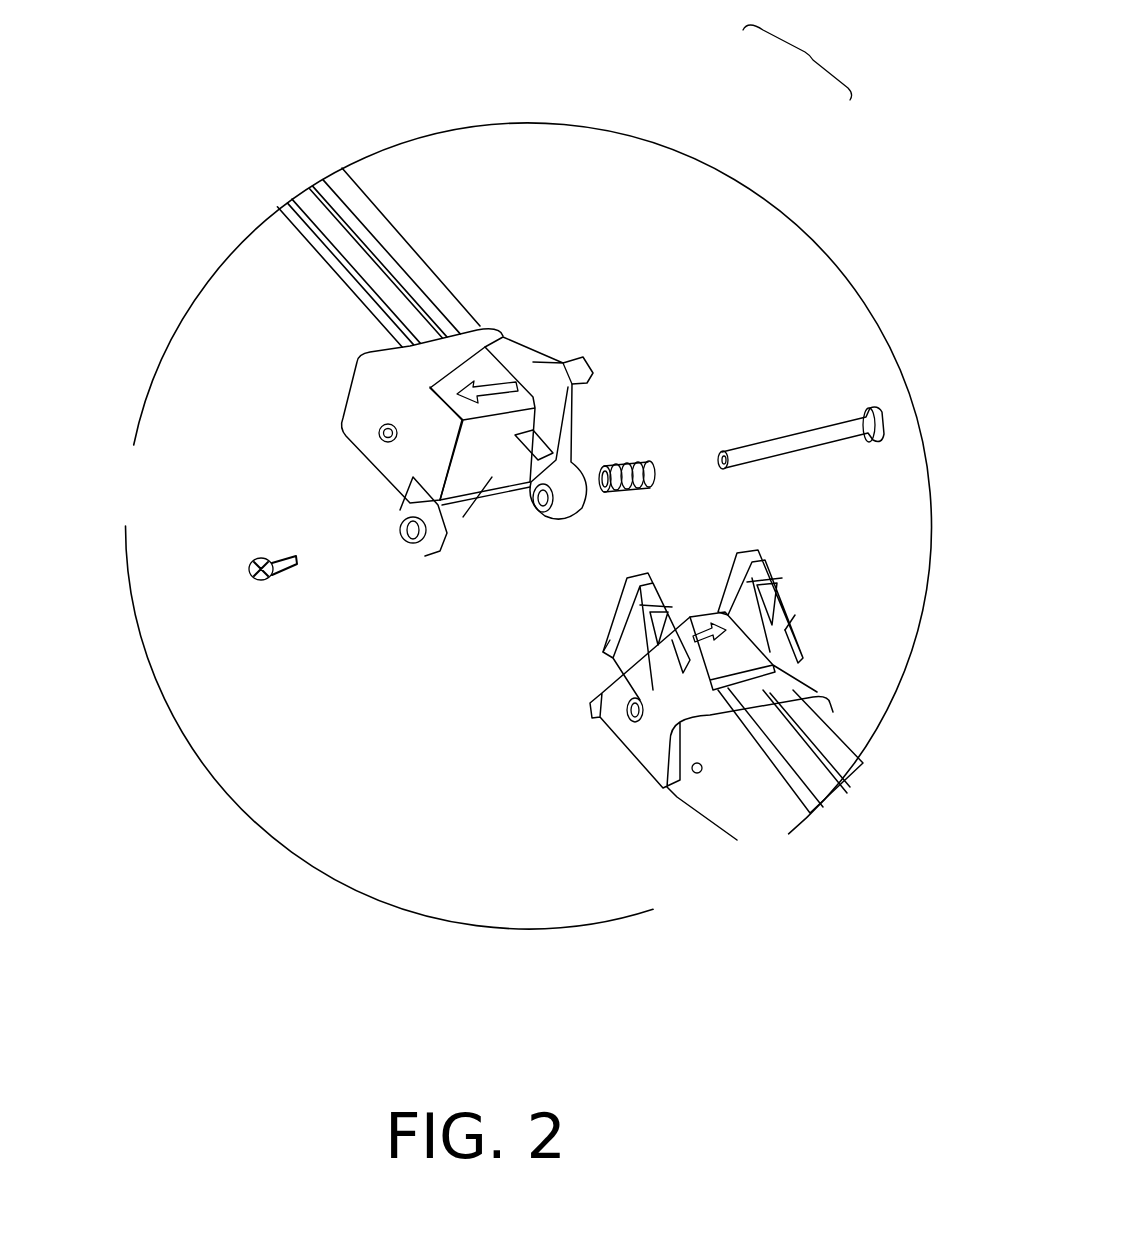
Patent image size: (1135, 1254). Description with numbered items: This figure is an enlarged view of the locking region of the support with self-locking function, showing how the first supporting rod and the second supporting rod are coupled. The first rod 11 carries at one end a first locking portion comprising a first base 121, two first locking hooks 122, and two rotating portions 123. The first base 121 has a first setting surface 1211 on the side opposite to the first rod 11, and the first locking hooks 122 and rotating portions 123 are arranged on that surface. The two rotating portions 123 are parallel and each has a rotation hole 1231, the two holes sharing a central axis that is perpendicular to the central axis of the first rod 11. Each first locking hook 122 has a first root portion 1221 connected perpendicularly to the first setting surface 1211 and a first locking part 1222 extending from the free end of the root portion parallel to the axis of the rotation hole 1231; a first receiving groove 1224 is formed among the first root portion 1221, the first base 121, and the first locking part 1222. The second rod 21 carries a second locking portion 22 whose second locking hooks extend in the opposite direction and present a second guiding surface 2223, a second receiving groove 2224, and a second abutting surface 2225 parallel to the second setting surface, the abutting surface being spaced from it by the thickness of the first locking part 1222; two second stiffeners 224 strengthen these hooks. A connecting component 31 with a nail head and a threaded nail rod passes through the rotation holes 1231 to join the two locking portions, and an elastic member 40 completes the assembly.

The first rod 11 is at (338, 222).
The first base 121 is at (500, 346).
The first root portion 1221 is at (582, 353).
The first locking part 1222 is at (590, 380).
The first receiving groove 1224 is at (588, 367).
The first locking hook 122 is at (810, 54).
The rotating portion 123 is at (405, 500).
The rotation hole 1231 is at (397, 533).
The first setting surface 1211 is at (492, 477).
The connecting component 31 is at (887, 413).
The elastic member 40 is at (657, 485).
The second locking portion 22 is at (660, 728).
The second guiding surface 2223 is at (623, 598).
The second receiving groove 2224 is at (770, 560).
The second abutting surface 2225 is at (620, 603).
The second stiffener 224 is at (790, 607).
The second rod 21 is at (740, 813).